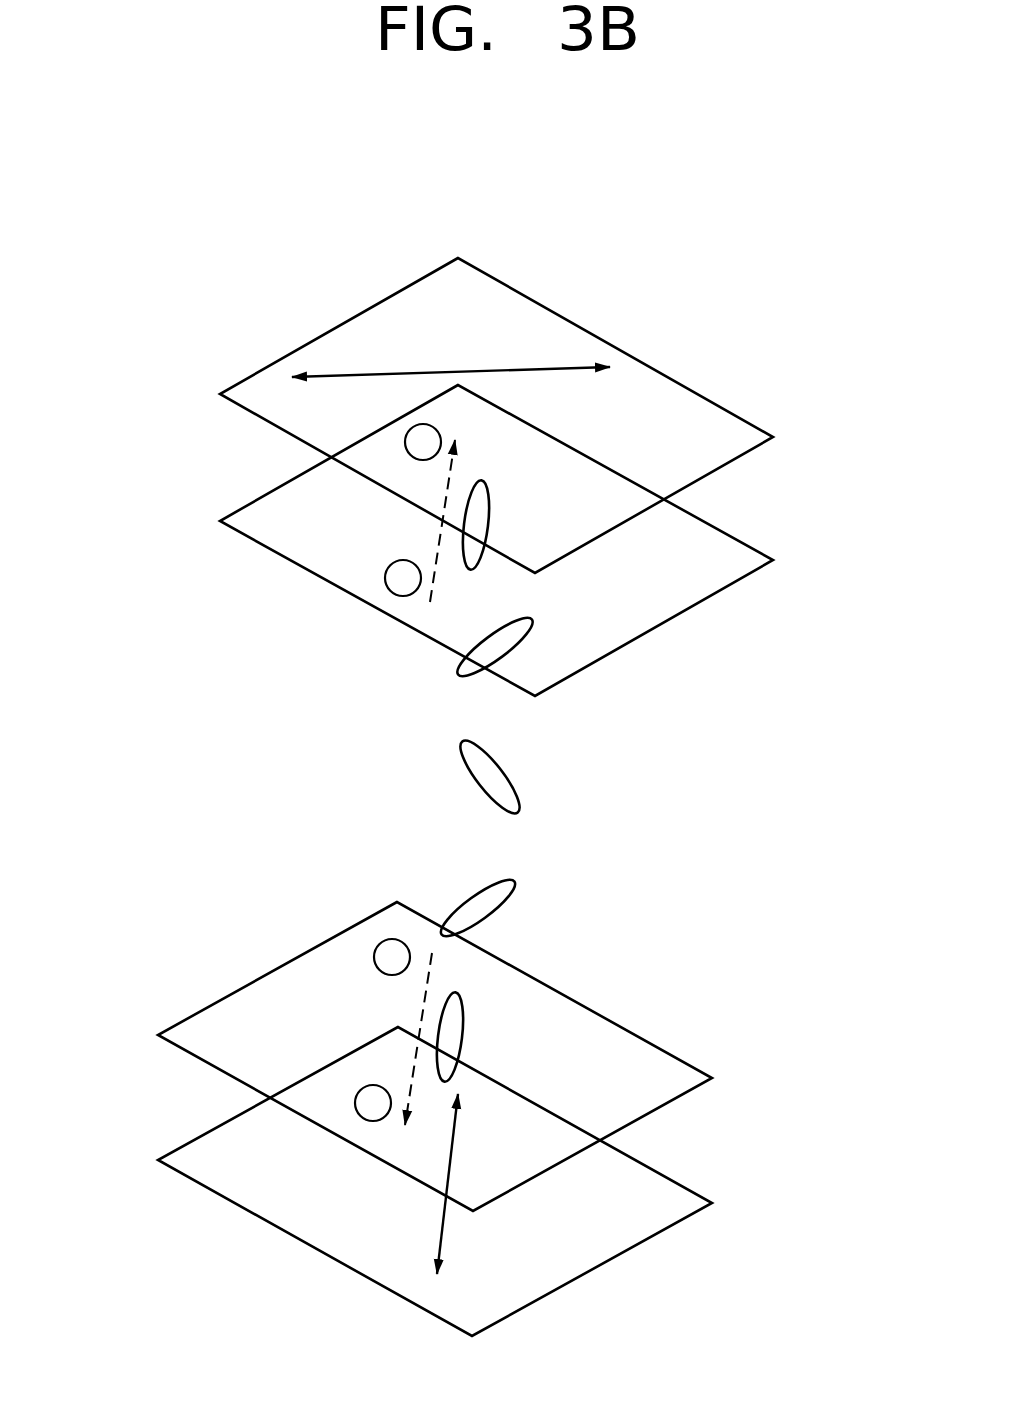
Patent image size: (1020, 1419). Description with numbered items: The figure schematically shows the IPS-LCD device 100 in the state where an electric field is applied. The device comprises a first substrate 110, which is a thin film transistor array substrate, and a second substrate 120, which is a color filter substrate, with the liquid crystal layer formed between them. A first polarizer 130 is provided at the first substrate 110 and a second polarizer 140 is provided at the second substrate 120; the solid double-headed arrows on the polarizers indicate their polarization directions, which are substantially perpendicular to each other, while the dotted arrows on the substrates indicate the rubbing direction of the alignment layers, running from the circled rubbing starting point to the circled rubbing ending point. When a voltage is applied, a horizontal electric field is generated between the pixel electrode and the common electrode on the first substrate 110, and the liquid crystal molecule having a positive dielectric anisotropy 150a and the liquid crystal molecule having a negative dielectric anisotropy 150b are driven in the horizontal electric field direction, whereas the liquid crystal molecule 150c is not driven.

The IPS-LCD device 100 is at (175, 313).
The first substrate 110 is at (660, 1062).
The second substrate 120 is at (722, 545).
The first polarizer 130 is at (660, 1187).
The second polarizer 140 is at (598, 355).
The liquid crystal molecule having a positive dielectric anisotropy 150a is at (515, 635).
The liquid crystal molecule having a negative dielectric anisotropy 150b is at (493, 778).
The liquid crystal molecule 150c is at (480, 520).